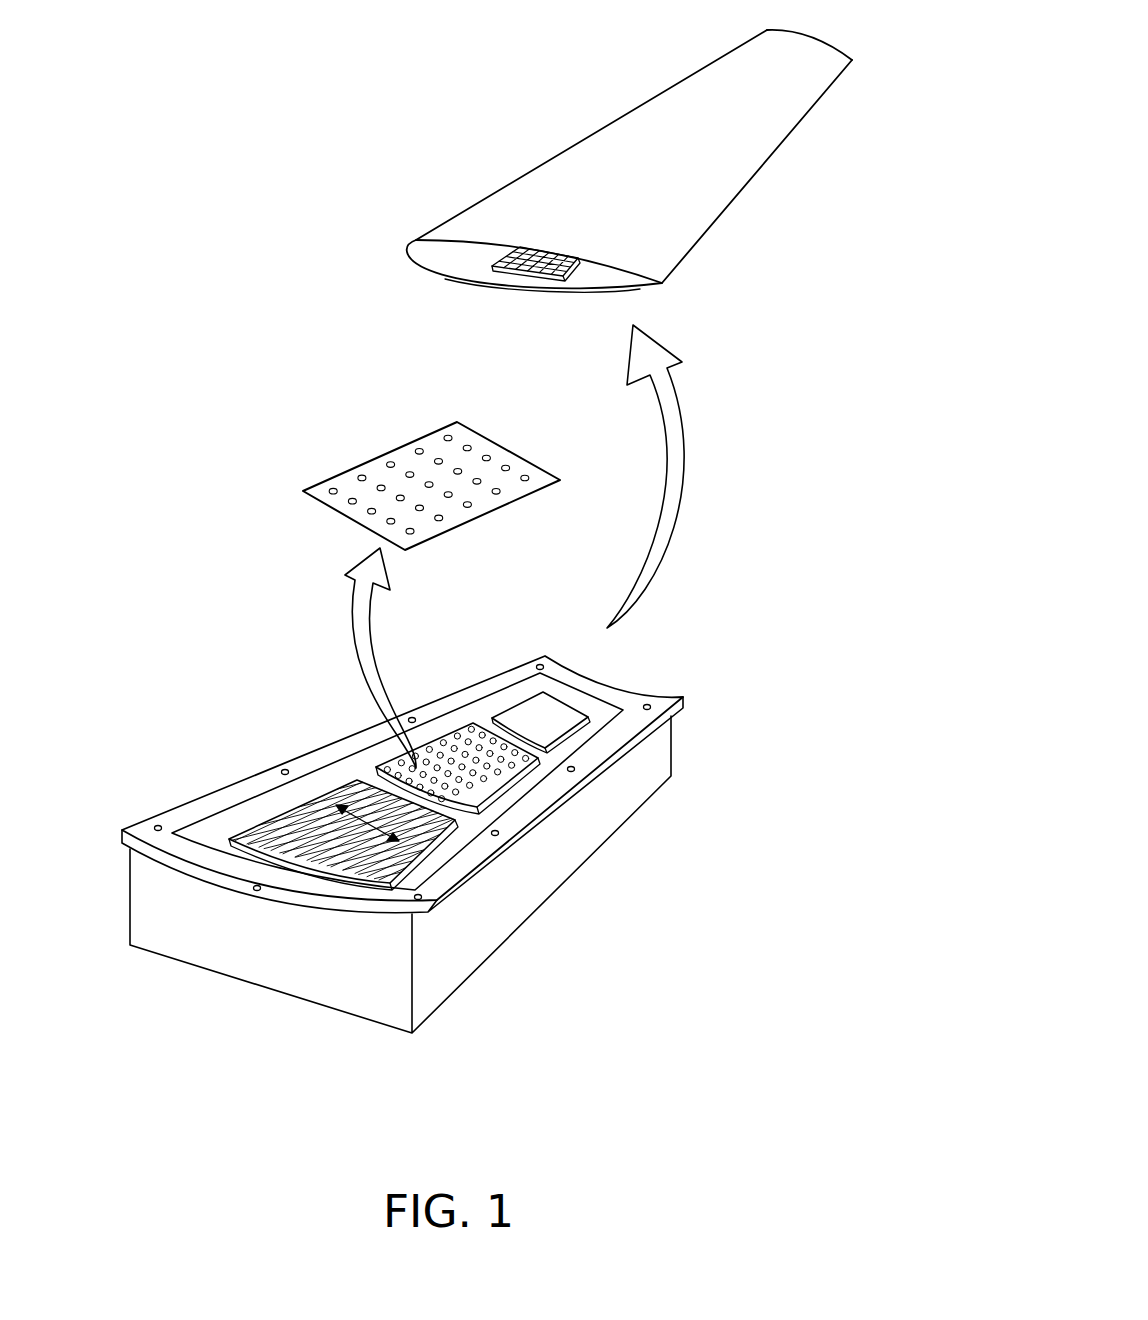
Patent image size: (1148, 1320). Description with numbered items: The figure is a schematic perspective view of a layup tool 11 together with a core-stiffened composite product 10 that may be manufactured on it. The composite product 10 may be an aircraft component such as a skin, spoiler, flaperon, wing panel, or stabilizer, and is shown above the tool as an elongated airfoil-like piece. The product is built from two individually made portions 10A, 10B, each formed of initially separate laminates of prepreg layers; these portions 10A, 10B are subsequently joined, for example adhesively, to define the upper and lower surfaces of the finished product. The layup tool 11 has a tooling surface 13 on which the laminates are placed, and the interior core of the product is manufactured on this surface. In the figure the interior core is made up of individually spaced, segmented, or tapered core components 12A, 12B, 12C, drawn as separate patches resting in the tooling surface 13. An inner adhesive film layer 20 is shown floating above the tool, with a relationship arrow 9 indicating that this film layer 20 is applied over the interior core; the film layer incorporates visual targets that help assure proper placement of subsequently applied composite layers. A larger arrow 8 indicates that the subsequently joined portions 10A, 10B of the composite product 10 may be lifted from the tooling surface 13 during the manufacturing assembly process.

The core-stiffened composite product 10 is at (568, 100).
The portion of the composite product 10A is at (763, 120).
The portion of the composite product 10B is at (558, 287).
The core component 12A is at (518, 270).
The core component 12B is at (493, 772).
The core component 12C is at (557, 728).
The inner adhesive film layer 20 is at (355, 521).
The arrow 8 is at (677, 480).
The relationship arrow 9 is at (362, 683).
The layup tool 11 is at (442, 972).
The tooling surface 13 is at (322, 758).